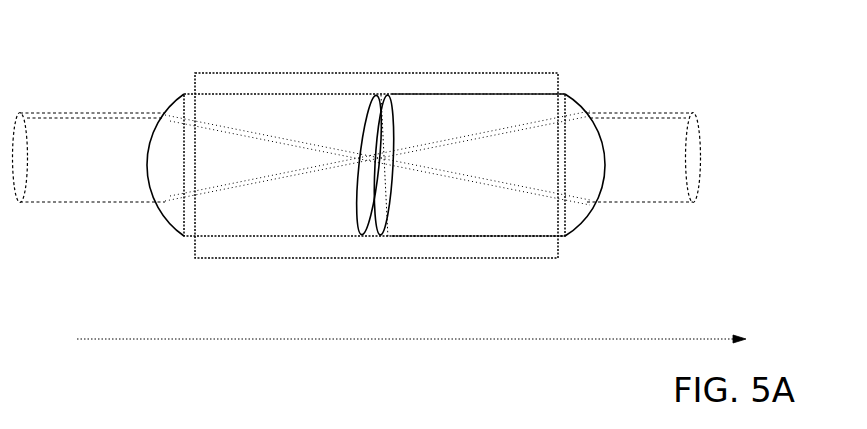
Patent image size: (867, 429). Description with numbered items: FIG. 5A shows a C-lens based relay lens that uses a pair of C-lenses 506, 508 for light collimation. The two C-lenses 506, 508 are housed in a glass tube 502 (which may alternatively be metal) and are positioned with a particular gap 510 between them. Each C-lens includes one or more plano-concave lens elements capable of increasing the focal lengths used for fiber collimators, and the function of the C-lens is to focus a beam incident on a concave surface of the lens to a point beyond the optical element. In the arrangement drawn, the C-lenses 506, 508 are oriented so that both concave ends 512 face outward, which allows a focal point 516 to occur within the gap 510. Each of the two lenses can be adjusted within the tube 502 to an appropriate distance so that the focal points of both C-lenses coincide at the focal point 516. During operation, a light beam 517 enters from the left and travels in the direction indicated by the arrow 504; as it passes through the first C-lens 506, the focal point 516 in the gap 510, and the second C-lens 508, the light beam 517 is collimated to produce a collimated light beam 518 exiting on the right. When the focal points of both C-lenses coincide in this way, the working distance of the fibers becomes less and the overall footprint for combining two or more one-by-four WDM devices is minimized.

The glass tube 502 is at (490, 73).
The arrow 504 is at (411, 349).
The C-lens 506 is at (291, 224).
The C-lens 508 is at (455, 226).
The gap 510 is at (381, 95).
The concave ends 512 is at (167, 110).
The focal point 516 is at (386, 235).
The light beam 517 is at (74, 172).
The collimated light beam 518 is at (664, 168).